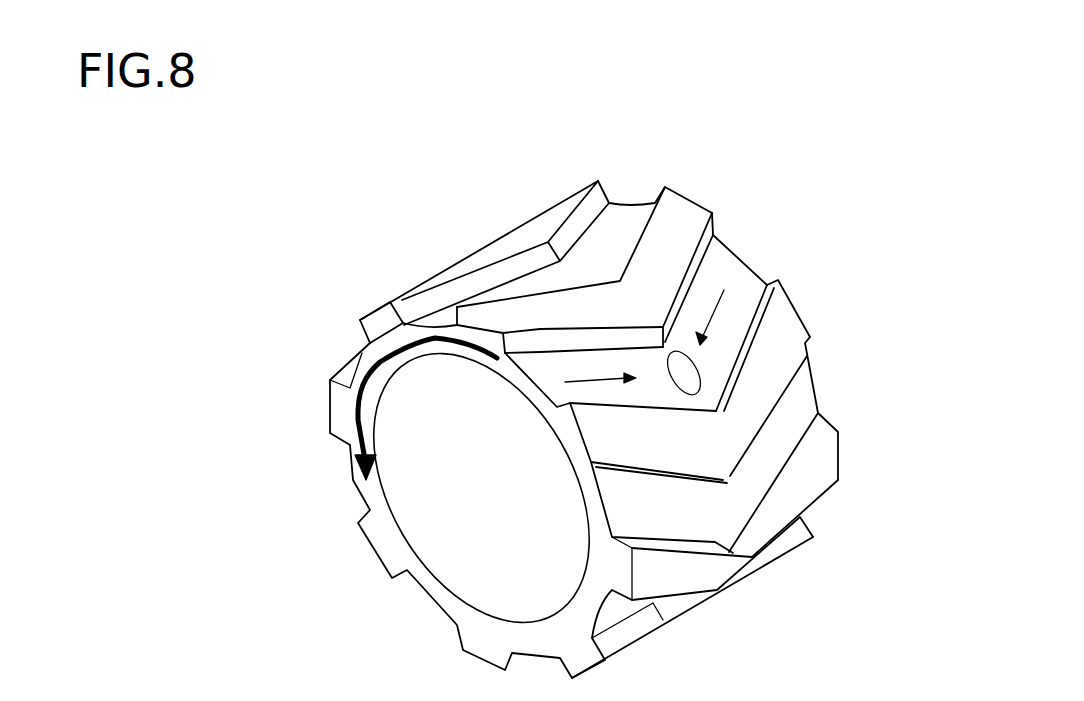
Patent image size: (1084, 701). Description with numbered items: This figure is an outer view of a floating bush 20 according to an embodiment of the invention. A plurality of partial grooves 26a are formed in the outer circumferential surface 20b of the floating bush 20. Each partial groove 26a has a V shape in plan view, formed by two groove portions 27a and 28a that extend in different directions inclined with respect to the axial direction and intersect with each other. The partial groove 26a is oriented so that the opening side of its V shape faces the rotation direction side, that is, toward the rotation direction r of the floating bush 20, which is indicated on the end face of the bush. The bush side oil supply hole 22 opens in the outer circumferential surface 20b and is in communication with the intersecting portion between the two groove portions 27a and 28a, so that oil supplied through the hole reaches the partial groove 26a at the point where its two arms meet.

The floating bush 20 is at (323, 232).
The outer circumferential surface 20b is at (809, 300).
The bush side oil supply hole 22 is at (683, 382).
The partial groove 26a is at (750, 248).
The groove portion 27a is at (806, 418).
The groove portion 28a is at (697, 517).
The rotation direction r is at (373, 367).